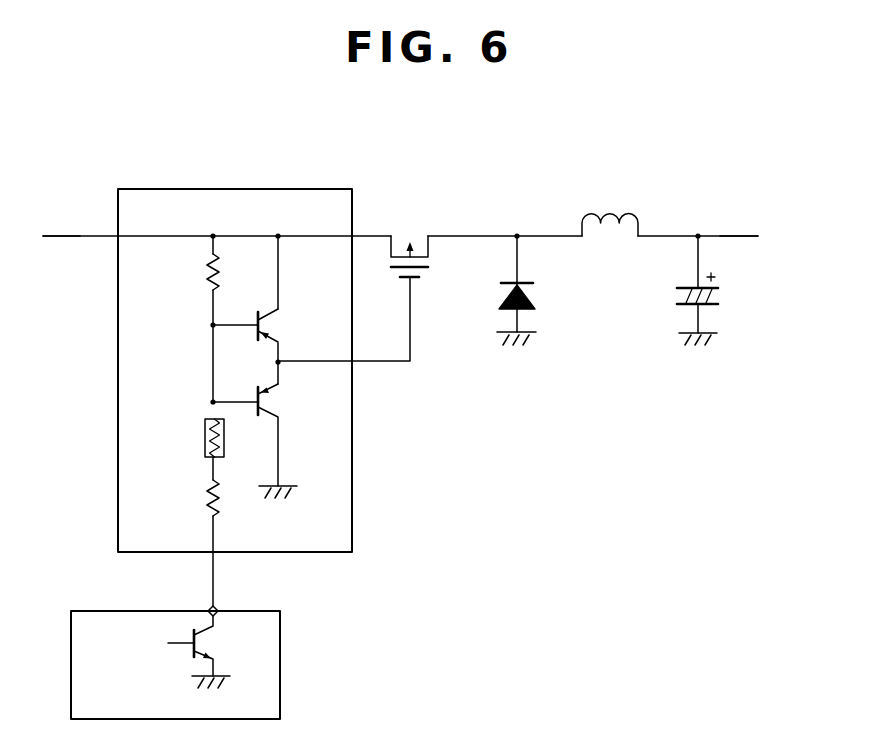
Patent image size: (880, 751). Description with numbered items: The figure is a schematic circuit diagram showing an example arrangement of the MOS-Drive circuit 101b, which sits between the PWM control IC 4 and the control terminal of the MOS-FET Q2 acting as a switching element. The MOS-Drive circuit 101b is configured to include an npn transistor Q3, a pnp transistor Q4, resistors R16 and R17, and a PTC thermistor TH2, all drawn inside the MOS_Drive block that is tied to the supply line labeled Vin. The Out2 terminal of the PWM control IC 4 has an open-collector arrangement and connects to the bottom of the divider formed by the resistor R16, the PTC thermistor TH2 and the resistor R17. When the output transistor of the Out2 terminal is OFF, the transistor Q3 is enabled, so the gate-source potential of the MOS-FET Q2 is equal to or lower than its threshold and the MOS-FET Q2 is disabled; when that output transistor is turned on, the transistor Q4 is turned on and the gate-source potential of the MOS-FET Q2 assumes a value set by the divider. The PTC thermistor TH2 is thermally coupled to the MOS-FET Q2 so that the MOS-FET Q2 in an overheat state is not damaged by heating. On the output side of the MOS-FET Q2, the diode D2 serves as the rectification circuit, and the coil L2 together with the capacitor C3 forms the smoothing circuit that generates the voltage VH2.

The MOS-Drive circuit 101b is at (314, 189).
The PWM control IC 4 is at (281, 660).
The MOS-FET Q2 is at (410, 235).
The npn transistor Q3 is at (279, 323).
The pnp transistor Q4 is at (279, 400).
The resistor R16 is at (207, 271).
The resistor R17 is at (207, 495).
The PTC thermistor TH2 is at (206, 416).
The diode D2 is at (537, 300).
The coil L2 is at (619, 213).
The capacitor C3 is at (721, 297).
The input voltage Vin is at (63, 234).
The voltage VH2 is at (731, 235).
The Out2 terminal Out2 is at (209, 606).